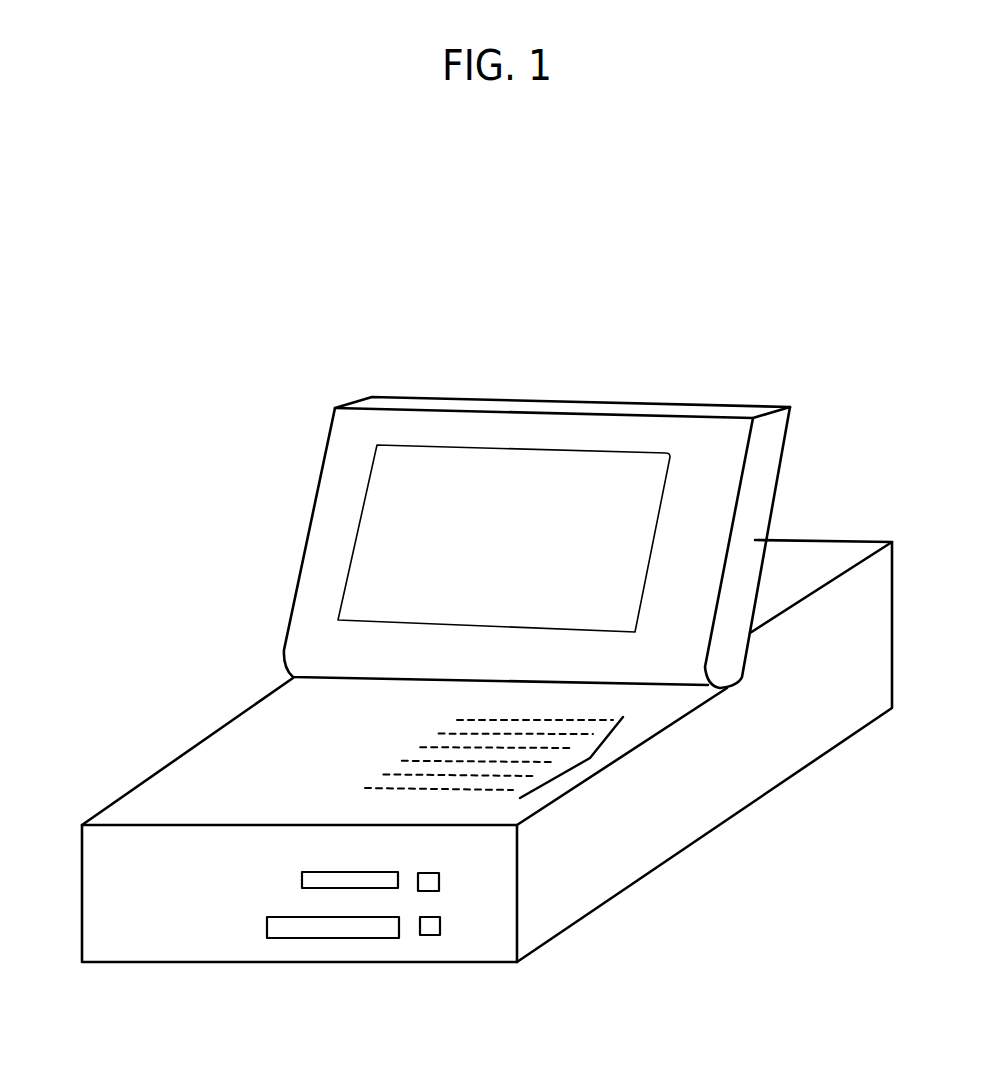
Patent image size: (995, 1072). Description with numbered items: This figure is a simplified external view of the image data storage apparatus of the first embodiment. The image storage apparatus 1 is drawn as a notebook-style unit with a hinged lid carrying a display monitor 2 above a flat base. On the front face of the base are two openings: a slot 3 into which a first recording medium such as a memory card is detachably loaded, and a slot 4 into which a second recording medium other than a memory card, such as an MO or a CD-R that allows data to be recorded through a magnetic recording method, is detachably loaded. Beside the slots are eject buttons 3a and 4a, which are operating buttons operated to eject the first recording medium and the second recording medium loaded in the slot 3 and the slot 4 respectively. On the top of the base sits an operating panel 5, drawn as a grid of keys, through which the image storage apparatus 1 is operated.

The image storage apparatus 1 is at (142, 710).
The display monitor 2 is at (462, 470).
The slot 3 is at (300, 878).
The eject button 3a is at (440, 879).
The slot 4 is at (347, 938).
The eject button 4a is at (440, 930).
The operating panel 5 is at (590, 760).